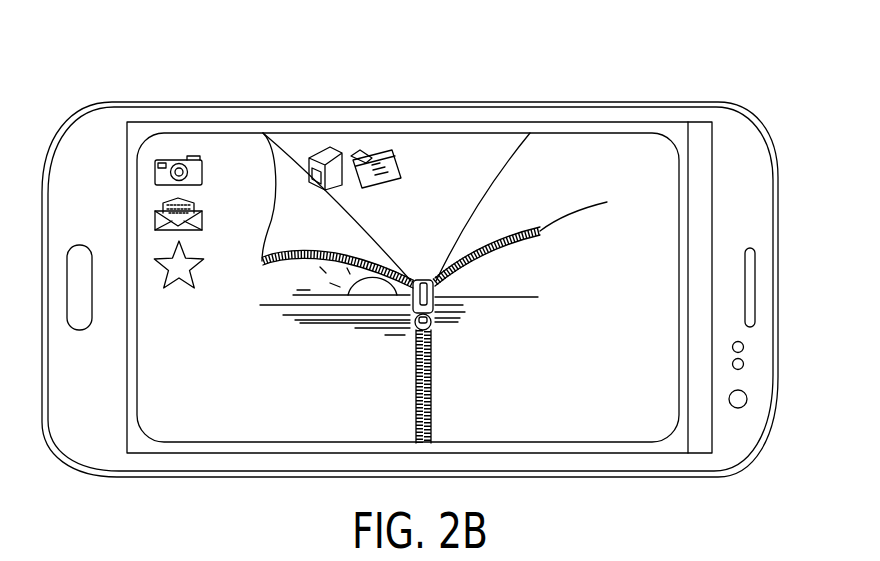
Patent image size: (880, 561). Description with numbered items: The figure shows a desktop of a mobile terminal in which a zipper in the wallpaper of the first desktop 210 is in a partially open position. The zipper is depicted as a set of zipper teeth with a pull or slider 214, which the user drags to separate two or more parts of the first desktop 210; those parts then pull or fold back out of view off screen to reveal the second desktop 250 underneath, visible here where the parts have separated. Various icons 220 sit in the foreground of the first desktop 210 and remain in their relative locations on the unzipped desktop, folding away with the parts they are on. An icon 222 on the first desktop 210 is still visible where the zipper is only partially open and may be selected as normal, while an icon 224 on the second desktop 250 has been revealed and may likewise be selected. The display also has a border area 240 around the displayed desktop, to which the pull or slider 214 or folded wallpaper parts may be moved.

The first desktop 210 is at (156, 396).
The pull or slider 214 is at (432, 321).
The icons 220 is at (146, 249).
The icon 222 is at (186, 288).
The icon 224 is at (384, 163).
The border area 240 is at (681, 140).
The second desktop 250 is at (487, 152).